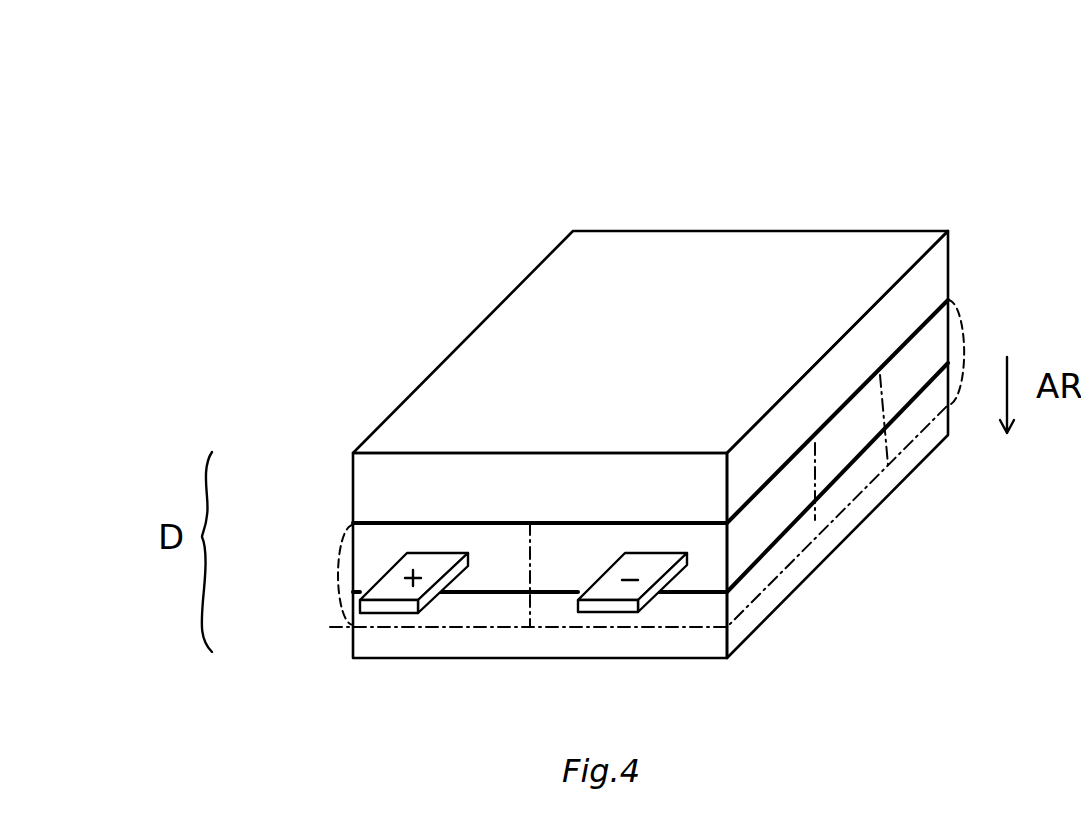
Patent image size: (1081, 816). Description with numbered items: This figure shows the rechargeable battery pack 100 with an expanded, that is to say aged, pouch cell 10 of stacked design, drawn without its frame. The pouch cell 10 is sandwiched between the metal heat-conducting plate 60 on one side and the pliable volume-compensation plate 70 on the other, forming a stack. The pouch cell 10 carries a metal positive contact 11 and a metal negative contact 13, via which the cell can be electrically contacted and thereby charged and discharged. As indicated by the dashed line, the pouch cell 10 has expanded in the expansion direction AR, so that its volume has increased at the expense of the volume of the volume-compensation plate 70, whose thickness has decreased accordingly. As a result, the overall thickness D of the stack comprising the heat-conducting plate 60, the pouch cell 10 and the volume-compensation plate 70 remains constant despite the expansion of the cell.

The rechargeable battery pack 100 is at (477, 90).
The heat-conducting plate 60 is at (950, 255).
The volume-compensation plate 70 is at (753, 623).
The pouch cell 10 is at (850, 433).
The positive contact 11 is at (375, 608).
The negative contact 13 is at (590, 608).